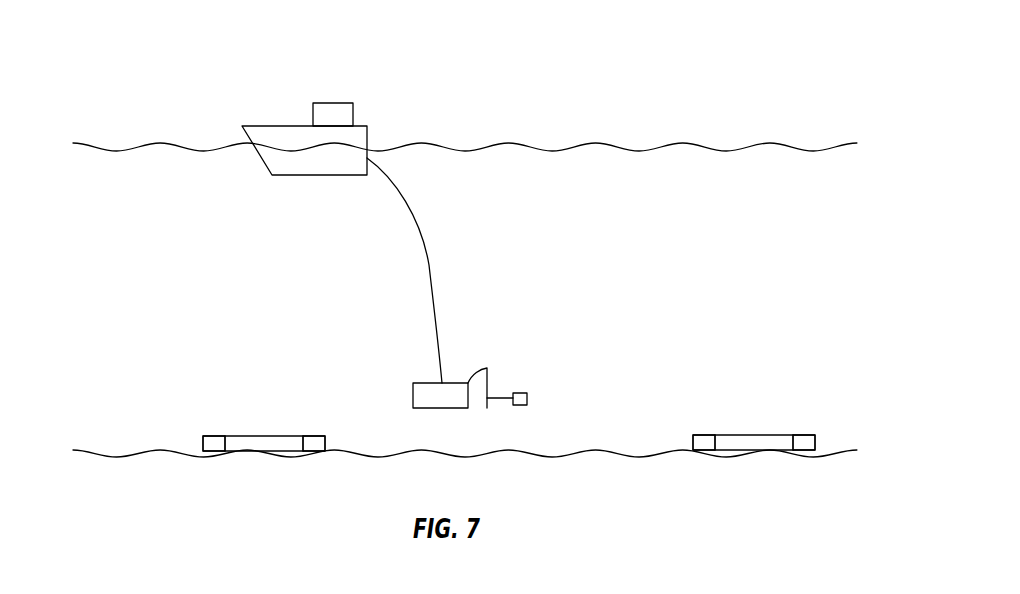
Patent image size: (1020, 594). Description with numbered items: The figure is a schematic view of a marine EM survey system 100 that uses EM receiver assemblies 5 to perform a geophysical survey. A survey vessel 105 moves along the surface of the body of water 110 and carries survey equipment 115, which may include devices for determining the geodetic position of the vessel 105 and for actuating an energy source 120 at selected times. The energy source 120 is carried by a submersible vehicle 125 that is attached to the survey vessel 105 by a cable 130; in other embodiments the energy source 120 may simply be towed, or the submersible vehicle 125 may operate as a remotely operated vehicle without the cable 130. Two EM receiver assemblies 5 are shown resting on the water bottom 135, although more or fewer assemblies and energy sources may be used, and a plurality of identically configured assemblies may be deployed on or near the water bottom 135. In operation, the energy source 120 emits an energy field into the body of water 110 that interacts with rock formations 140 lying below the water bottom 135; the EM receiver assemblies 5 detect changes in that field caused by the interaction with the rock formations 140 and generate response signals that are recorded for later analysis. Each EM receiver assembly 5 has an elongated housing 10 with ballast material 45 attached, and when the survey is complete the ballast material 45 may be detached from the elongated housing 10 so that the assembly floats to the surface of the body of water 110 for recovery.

The EM receiver assembly 5 is at (228, 424).
The elongated housing 10 is at (265, 435).
The ballast material 45 is at (318, 435).
The marine EM survey system 100 is at (458, 78).
The survey vessel 105 is at (283, 125).
The body of water 110 is at (623, 256).
The survey equipment 115 is at (355, 115).
The energy source 120 is at (520, 391).
The submersible vehicle 125 is at (425, 382).
The cable 130 is at (428, 261).
The water bottom 135 is at (628, 452).
The rock formations 140 is at (625, 494).